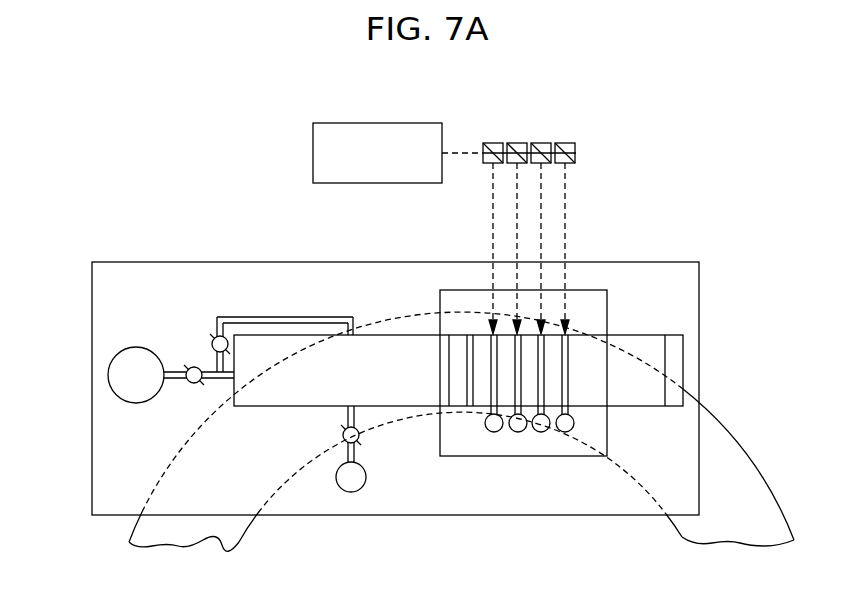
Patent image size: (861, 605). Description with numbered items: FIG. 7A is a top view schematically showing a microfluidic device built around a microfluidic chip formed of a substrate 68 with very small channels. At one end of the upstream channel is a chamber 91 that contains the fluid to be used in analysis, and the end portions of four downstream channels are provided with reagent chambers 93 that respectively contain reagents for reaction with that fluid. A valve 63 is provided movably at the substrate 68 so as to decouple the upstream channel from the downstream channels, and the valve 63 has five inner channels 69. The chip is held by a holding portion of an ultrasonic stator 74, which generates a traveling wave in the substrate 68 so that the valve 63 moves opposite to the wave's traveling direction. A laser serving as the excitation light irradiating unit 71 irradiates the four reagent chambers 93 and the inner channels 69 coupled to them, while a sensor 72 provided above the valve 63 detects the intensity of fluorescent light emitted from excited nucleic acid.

The substrate 68 is at (153, 262).
The excitation light irradiating unit 71 is at (298, 115).
The sensor 72 is at (587, 290).
The valve 63 is at (653, 350).
The inner channels 69 is at (517, 360).
The reagent chambers 93 is at (565, 432).
The chamber 91 is at (133, 385).
The ultrasonic stator 74 is at (727, 467).